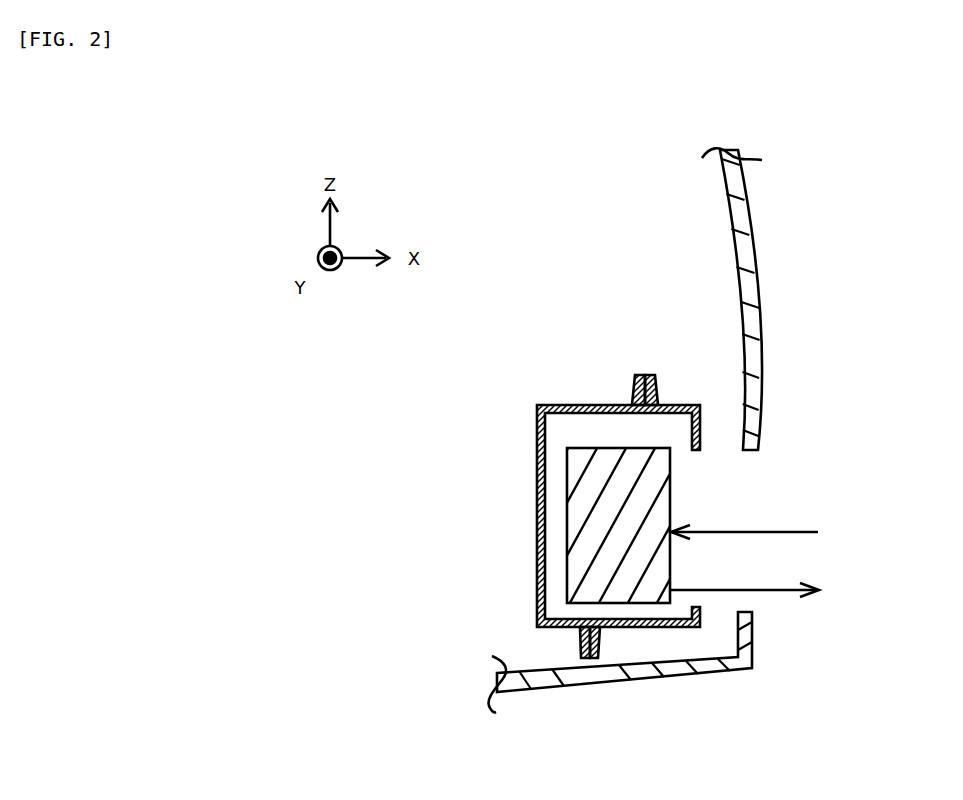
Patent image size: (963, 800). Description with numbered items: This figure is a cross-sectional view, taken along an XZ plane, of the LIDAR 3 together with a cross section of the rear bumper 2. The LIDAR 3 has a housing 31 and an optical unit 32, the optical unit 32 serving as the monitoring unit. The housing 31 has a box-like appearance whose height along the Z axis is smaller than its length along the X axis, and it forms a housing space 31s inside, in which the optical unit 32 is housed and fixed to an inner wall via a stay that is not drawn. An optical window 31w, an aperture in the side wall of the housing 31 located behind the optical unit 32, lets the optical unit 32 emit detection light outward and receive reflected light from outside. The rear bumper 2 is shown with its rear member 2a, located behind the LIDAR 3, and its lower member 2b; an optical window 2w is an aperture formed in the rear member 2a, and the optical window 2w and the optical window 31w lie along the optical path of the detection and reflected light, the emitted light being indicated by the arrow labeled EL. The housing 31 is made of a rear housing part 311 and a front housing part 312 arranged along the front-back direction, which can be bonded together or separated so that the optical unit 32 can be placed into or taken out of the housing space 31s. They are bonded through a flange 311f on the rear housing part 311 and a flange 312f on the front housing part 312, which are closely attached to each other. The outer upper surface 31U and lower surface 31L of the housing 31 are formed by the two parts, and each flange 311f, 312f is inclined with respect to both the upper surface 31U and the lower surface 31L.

The rear bumper 2 is at (795, 228).
The rear member 2a is at (760, 310).
The lower member 2b is at (672, 672).
The optical window 2w is at (755, 508).
The LIDAR 3 is at (424, 406).
The housing 31 is at (538, 588).
The upper surface 31U is at (662, 405).
The lower surface 31L is at (646, 627).
The housing space 31s is at (558, 540).
The optical window 31w is at (702, 494).
The rear housing part 311 is at (699, 436).
The flange 311f is at (663, 403).
The front housing part 312 is at (545, 405).
The flange 312f is at (633, 383).
The optical unit 32 is at (565, 487).
The emitted light EL is at (781, 597).